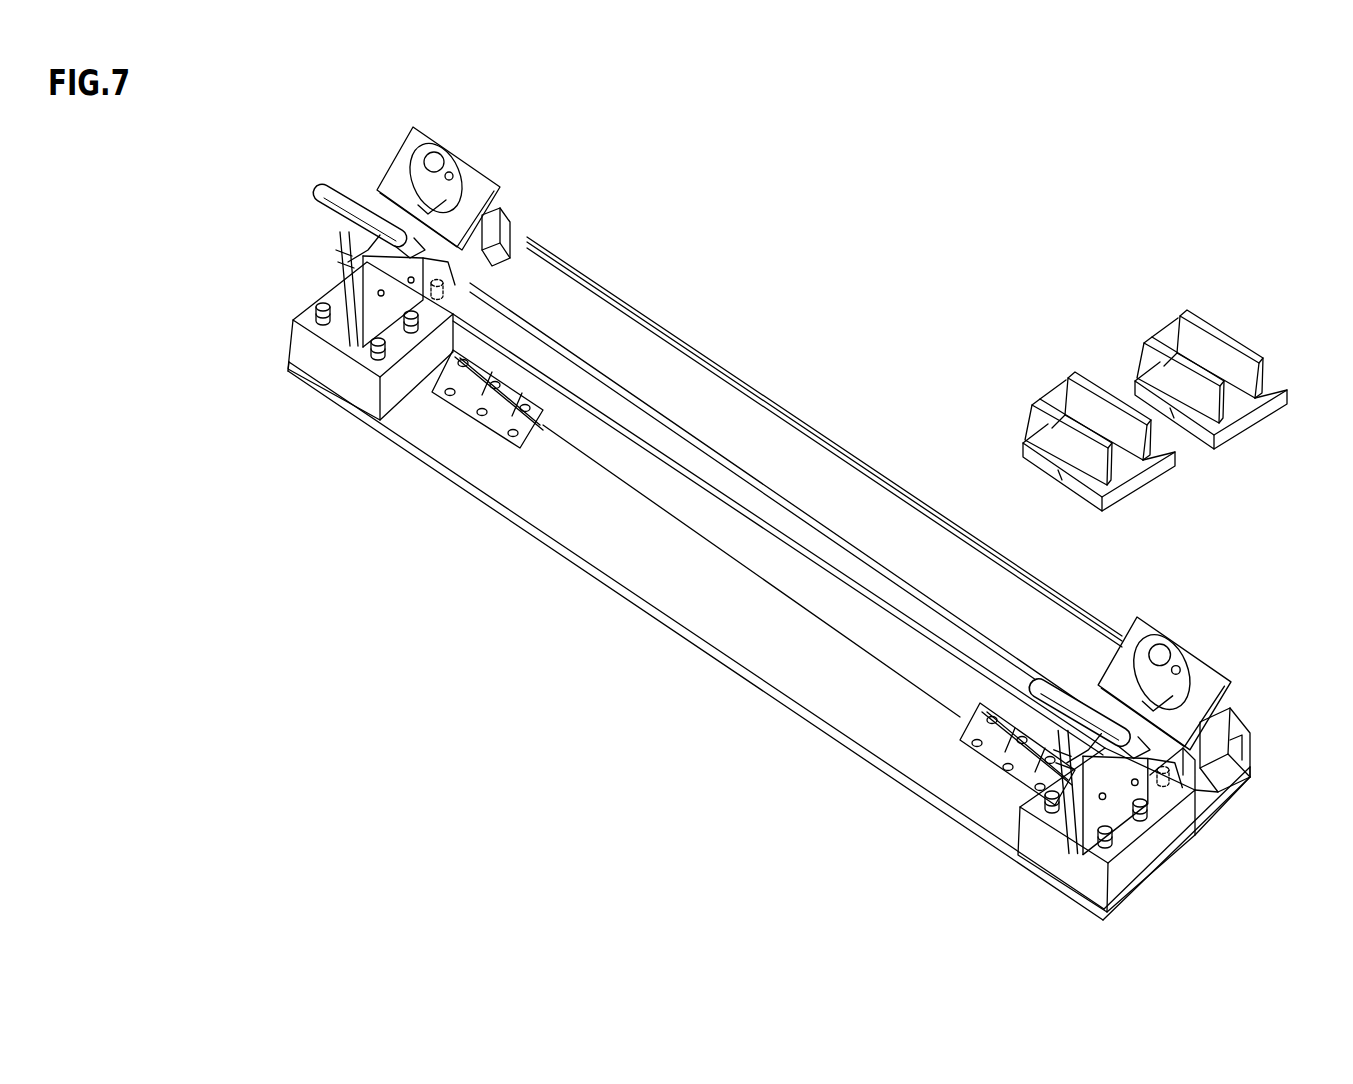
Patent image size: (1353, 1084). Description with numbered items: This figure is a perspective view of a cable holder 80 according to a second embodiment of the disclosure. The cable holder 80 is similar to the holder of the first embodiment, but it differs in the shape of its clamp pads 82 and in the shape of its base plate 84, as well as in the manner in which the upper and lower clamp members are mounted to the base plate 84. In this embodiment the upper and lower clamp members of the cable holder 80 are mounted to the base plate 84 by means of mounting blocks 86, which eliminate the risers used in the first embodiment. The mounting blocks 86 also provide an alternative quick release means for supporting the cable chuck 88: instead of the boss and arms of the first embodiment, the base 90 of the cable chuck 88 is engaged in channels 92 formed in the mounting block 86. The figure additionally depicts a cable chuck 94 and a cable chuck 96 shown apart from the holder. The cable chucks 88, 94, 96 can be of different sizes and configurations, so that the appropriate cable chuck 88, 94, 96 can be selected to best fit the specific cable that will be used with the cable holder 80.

The cable holder 80 is at (841, 374).
The clamp pads 82 is at (500, 190).
The base plate 84 is at (700, 588).
The mounting blocks 86 is at (342, 378).
The cable chuck 88 is at (498, 243).
The base 90 is at (1223, 773).
The channels 92 is at (1182, 818).
The cable chuck 94 is at (1153, 480).
The cable chuck 96 is at (1262, 423).